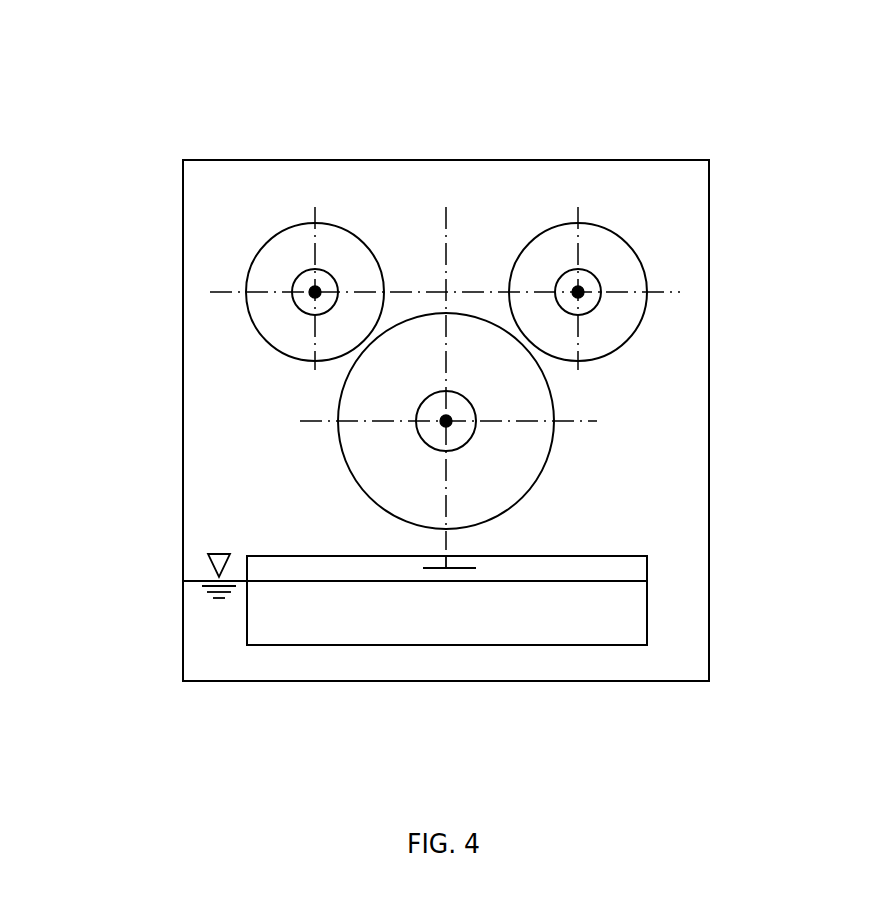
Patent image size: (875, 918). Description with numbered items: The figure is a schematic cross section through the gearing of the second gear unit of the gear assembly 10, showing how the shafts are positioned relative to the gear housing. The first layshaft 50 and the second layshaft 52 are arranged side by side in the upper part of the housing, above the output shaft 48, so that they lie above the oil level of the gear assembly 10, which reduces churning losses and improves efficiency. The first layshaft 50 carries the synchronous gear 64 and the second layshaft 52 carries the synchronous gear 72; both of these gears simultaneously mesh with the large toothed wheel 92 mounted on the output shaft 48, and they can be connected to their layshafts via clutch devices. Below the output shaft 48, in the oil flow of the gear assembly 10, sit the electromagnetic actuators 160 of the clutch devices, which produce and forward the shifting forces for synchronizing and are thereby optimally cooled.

The gear assembly 10 is at (709, 548).
The synchronous gear 72 is at (286, 253).
The second layshaft 52 is at (333, 275).
The synchronous gear 64 is at (628, 267).
The first layshaft 50 is at (587, 268).
The toothed wheel 92 is at (515, 462).
The output shaft 48 is at (427, 447).
The electromagnetic actuators 160 is at (377, 622).